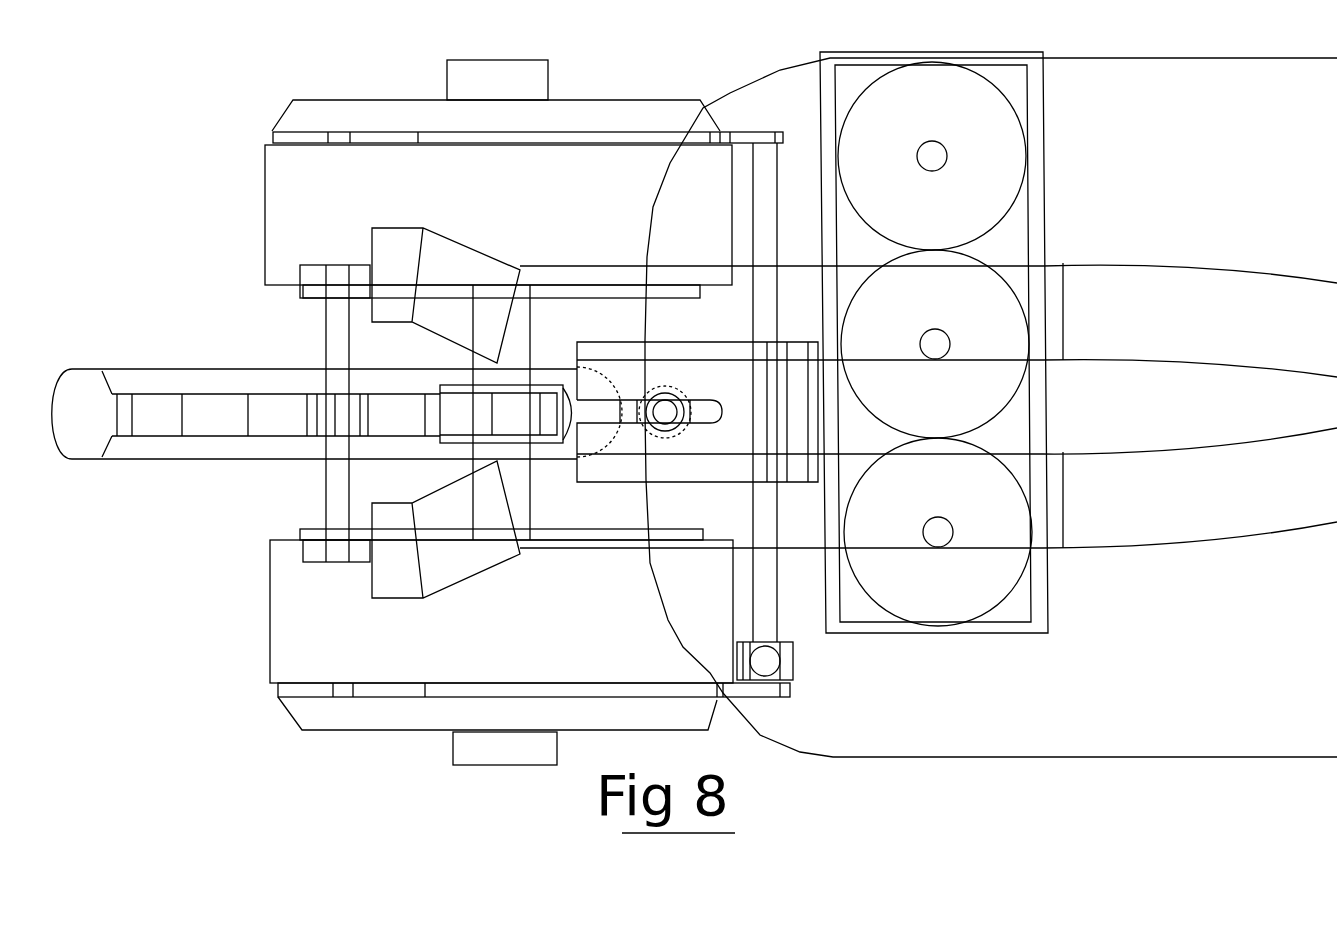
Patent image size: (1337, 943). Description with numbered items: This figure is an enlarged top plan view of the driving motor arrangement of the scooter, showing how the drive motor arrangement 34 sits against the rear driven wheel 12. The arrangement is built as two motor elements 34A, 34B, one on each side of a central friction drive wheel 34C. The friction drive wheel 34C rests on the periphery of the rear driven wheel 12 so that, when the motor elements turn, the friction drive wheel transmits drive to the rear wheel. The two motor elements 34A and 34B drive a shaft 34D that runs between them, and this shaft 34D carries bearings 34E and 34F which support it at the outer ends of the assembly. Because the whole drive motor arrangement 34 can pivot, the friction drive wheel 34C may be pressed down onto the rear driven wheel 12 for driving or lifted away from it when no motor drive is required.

The rear driven wheel 12 is at (203, 384).
The drive motor arrangement 34 is at (218, 606).
The motor element 34A is at (627, 153).
The motor element 34B is at (412, 660).
The friction drive wheel 34C is at (545, 386).
The shaft 34D is at (488, 322).
The bearing 34E is at (445, 76).
The bearing 34F is at (500, 751).